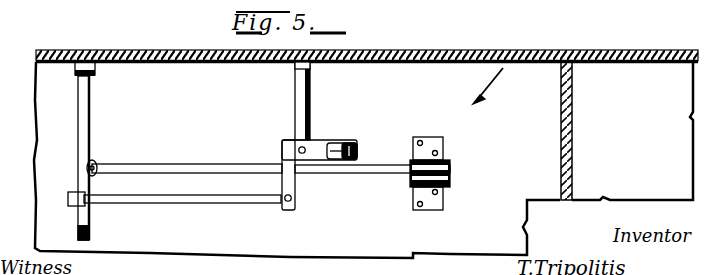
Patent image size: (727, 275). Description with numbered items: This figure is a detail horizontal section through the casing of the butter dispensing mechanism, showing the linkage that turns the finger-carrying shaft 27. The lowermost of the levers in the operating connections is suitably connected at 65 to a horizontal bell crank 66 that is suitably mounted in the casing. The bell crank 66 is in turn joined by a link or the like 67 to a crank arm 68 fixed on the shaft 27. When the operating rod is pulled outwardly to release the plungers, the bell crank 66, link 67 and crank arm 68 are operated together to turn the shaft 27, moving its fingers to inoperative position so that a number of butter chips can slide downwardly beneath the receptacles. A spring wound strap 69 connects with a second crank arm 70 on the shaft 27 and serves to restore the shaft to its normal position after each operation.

The shaft 27 is at (88, 147).
The connection 65 is at (347, 143).
The horizontal bell crank 66 is at (322, 140).
The link 67 is at (232, 204).
The crank arm 68 is at (88, 207).
The spring wound strap 69 is at (452, 168).
The crank arm 70 is at (372, 177).